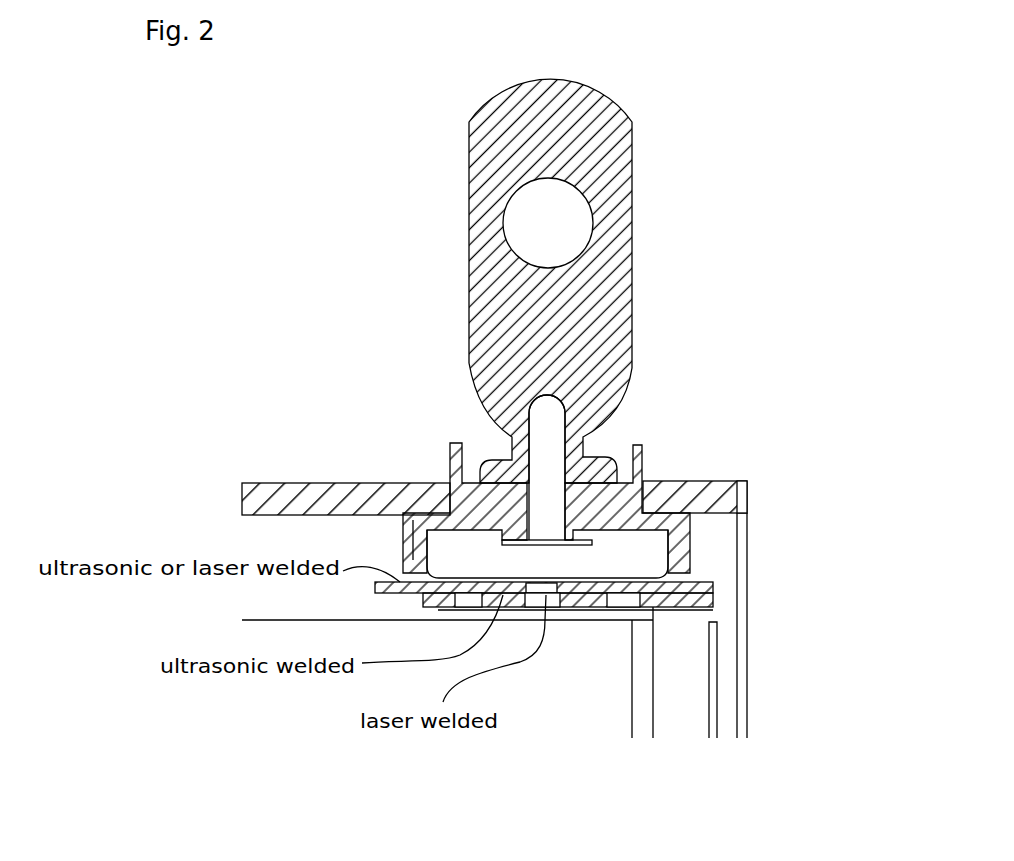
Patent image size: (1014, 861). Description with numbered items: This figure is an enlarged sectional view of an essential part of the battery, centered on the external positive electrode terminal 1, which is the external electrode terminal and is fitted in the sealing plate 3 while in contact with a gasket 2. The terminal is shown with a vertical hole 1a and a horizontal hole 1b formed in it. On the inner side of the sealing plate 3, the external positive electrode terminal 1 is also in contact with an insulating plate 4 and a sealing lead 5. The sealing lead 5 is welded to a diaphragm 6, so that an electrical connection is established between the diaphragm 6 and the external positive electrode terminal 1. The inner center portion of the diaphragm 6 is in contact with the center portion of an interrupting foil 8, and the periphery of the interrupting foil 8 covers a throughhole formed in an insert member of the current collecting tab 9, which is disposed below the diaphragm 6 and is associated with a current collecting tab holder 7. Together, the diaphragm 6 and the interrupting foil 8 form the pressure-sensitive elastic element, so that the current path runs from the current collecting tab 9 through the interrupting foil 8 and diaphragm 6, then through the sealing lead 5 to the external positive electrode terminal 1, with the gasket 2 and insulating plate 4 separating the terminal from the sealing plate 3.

The external positive electrode terminal 1 is at (605, 200).
The vertical hole 1a is at (537, 457).
The horizontal hole 1b is at (547, 393).
The gasket 2 is at (643, 448).
The sealing plate 3 is at (320, 483).
The insulating plate 4 is at (702, 481).
The sealing lead 5 is at (690, 560).
The pressure-sensitive elastic element (diaphragm) 6 is at (640, 552).
The current collecting tab holder 7 is at (548, 597).
The interrupting foil 8 is at (578, 585).
The current collecting tab 9 is at (745, 677).